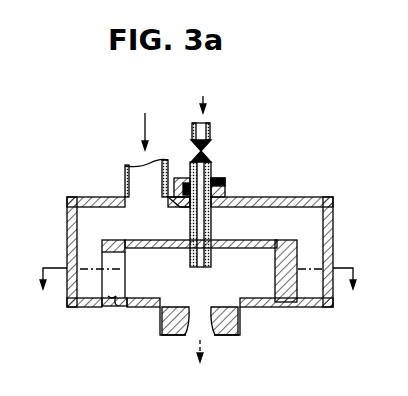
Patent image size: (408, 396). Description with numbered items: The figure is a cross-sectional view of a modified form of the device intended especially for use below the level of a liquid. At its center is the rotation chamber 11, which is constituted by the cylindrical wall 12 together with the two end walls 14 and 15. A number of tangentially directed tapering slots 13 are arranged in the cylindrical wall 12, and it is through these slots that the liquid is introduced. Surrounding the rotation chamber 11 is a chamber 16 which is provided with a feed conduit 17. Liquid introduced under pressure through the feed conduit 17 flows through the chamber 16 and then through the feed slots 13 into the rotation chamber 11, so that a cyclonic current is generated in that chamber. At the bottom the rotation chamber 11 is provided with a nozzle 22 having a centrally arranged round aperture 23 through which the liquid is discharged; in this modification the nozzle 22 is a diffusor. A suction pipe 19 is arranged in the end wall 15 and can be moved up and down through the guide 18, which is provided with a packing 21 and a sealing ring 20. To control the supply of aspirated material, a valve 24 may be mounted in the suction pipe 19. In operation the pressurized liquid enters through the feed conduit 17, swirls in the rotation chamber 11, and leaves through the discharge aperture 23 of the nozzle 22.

The rotation chamber 11 is at (263, 297).
The cylindrical wall 12 is at (293, 262).
The tangentially directed tapering slots 13 is at (112, 306).
The end wall 14 is at (133, 306).
The end wall 15 is at (230, 240).
The chamber 16 is at (333, 225).
The feed conduit 17 is at (140, 177).
The guide 18 is at (178, 207).
The suction pipe 19 is at (212, 170).
The sealing ring 20 is at (226, 181).
The packing 21 is at (225, 191).
The nozzle 22 is at (172, 322).
The round aperture 23 is at (208, 327).
The valve 24 is at (211, 143).